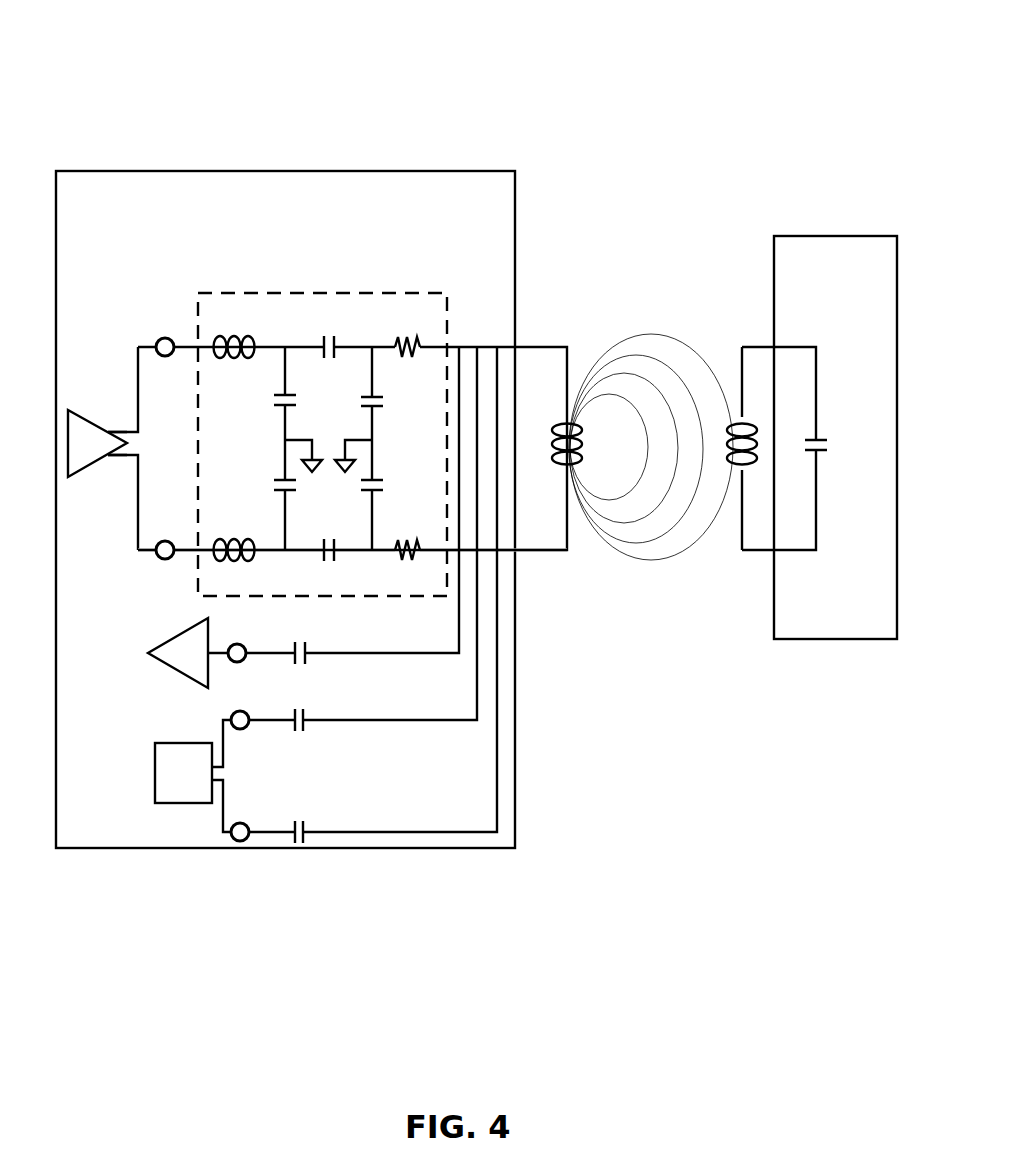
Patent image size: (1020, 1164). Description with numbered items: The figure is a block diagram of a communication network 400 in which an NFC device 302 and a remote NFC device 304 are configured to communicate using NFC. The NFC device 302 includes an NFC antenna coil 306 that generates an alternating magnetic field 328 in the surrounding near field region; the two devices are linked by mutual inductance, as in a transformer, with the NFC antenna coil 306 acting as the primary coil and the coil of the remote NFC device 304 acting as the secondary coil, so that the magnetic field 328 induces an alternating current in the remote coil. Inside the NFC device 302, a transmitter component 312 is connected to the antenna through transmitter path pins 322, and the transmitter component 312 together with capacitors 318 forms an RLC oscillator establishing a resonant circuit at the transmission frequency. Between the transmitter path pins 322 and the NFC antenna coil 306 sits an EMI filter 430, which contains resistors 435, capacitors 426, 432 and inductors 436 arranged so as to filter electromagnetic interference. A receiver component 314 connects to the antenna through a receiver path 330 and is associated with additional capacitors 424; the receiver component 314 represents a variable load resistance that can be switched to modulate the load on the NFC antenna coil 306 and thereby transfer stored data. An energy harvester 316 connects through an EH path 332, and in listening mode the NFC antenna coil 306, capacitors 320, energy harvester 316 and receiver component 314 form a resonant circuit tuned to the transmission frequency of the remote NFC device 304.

The communication network 400 is at (757, 60).
The NFC device 302 is at (343, 171).
The remote NFC device 304 is at (836, 236).
The NFC antenna coil 306 is at (571, 472).
The transmitter component 312 is at (89, 413).
The receiver component 314 is at (194, 628).
The energy harvester 316 is at (155, 768).
The capacitors 318 is at (332, 335).
The capacitors 320 is at (303, 731).
The transmitter path 322 is at (164, 338).
The magnetic field 328 is at (650, 333).
The receiver path 330 is at (242, 644).
The EH path 332 is at (243, 711).
The additional capacitors 424 is at (303, 665).
The capacitors 426 is at (380, 408).
The EMI filter 430 is at (385, 293).
The capacitors 432 is at (280, 408).
The resistors 435 is at (397, 360).
The inductors 436 is at (232, 335).